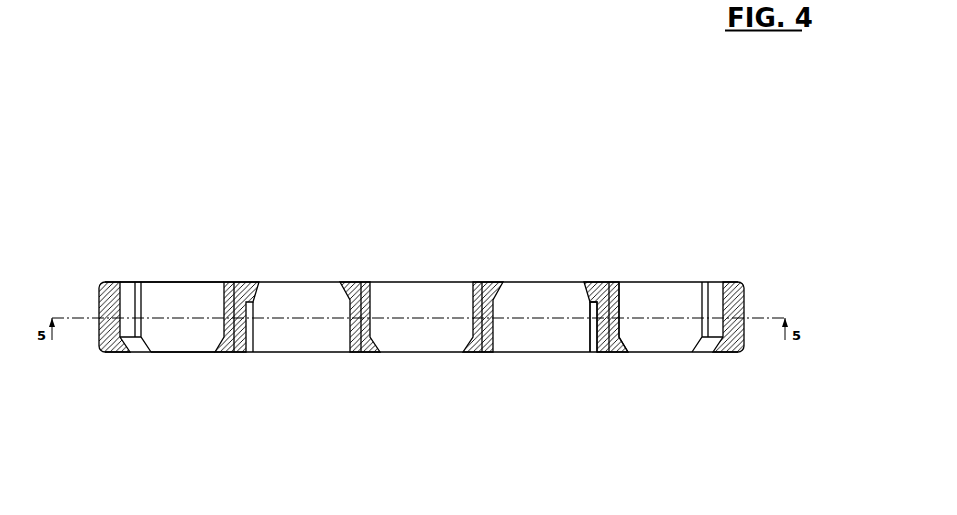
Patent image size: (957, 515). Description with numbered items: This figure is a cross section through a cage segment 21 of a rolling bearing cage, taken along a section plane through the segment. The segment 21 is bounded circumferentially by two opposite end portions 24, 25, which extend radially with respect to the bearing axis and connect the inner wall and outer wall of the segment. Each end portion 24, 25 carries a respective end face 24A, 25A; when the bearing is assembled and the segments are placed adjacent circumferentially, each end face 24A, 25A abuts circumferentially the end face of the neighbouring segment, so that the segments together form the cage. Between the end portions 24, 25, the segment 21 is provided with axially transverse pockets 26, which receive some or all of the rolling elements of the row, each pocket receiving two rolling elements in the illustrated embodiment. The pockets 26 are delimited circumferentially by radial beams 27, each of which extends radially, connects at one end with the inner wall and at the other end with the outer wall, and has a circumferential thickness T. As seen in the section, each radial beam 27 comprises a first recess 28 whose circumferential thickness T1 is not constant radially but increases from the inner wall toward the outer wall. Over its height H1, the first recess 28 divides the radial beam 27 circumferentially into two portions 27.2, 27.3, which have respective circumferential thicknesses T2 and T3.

The segment 21 is at (390, 102).
The end portion 24 is at (116, 282).
The end face 24A is at (100, 333).
The end portion 25 is at (736, 282).
The end face 25A is at (745, 337).
The pocket 26 is at (185, 300).
The radial beam 27 is at (252, 353).
The portion of the radial beam 27.2 is at (590, 318).
The portion of the radial beam 27.3 is at (623, 318).
The first recess 28 is at (237, 282).